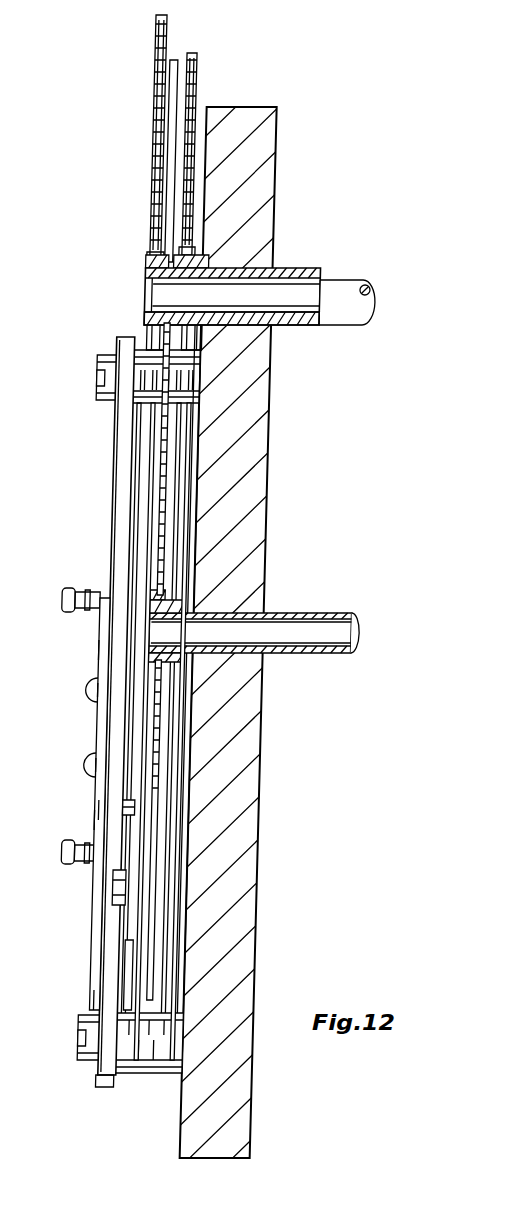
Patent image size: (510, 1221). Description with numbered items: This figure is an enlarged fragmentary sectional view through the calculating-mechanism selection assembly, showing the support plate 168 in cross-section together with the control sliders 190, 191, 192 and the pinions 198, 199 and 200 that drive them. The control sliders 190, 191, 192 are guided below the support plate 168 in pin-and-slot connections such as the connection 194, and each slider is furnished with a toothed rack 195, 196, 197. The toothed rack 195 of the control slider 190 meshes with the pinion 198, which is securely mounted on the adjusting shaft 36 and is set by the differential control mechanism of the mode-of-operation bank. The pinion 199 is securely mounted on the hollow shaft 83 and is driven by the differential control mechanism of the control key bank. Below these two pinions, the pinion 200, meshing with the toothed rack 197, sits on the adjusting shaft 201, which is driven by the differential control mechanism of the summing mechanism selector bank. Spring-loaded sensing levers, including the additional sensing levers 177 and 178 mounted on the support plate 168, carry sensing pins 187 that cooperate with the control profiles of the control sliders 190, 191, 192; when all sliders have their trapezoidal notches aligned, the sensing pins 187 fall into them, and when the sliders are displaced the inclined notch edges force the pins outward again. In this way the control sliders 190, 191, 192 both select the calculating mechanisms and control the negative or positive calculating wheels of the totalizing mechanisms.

The adjusting shaft 36 is at (333, 277).
The hollow shaft 83 is at (292, 328).
The support plate 168 is at (112, 486).
The sensing lever 177 is at (100, 649).
The sensing lever 178 is at (97, 790).
The sensing pin 187 is at (132, 805).
The control slider 190 is at (130, 987).
The control slider 191 is at (182, 768).
The control slider 192 is at (145, 965).
The pin-and-slot connection 194 is at (125, 875).
The toothed rack 195 is at (168, 47).
The toothed rack 196 is at (198, 90).
The toothed rack 197 is at (162, 708).
The pinion 198 is at (147, 260).
The pinion 199 is at (200, 263).
The pinion 200 is at (160, 597).
The adjusting shaft 201 is at (322, 612).